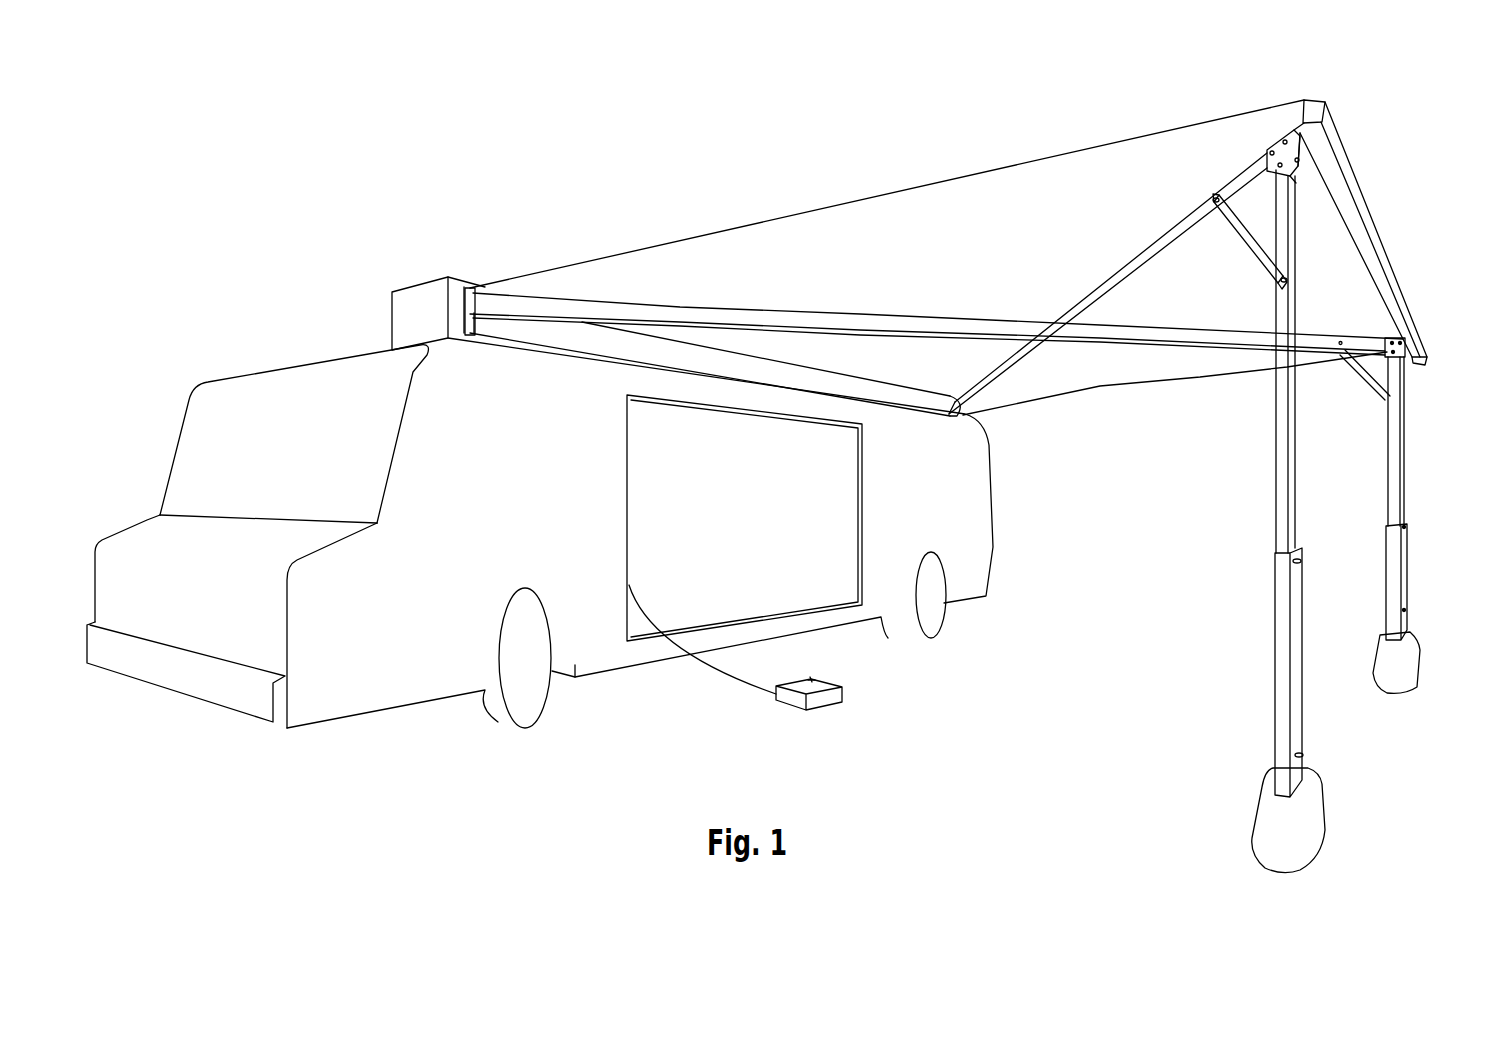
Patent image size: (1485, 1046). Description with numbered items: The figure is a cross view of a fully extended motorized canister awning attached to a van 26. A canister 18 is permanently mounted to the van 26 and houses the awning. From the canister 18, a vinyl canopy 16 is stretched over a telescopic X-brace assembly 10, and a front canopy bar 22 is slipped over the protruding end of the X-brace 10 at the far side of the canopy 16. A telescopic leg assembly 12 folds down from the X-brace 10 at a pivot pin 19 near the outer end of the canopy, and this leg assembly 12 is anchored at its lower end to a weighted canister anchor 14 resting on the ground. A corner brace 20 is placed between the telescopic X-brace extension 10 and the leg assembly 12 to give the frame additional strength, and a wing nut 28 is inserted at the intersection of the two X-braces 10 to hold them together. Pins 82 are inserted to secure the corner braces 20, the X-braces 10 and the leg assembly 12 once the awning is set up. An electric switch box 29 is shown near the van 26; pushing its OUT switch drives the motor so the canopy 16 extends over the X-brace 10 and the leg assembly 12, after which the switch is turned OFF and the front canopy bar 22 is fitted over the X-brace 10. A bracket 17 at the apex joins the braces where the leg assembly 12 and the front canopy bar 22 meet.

The telescopic X-brace assembly 10 is at (818, 317).
The telescopic leg assembly 12 is at (1277, 493).
The weighted canister anchor 14 is at (1317, 815).
The vinyl canopy 16 is at (853, 222).
The apex bracket 17 is at (1277, 147).
The canister 18 is at (390, 300).
The pivot pin 19 is at (1293, 183).
The corner brace 20 is at (1253, 250).
The front canopy bar 22 is at (1382, 242).
The van 26 is at (165, 505).
The wing nut 28 is at (1043, 340).
The electric switch box 29 is at (842, 697).
The pins 82 is at (1217, 203).